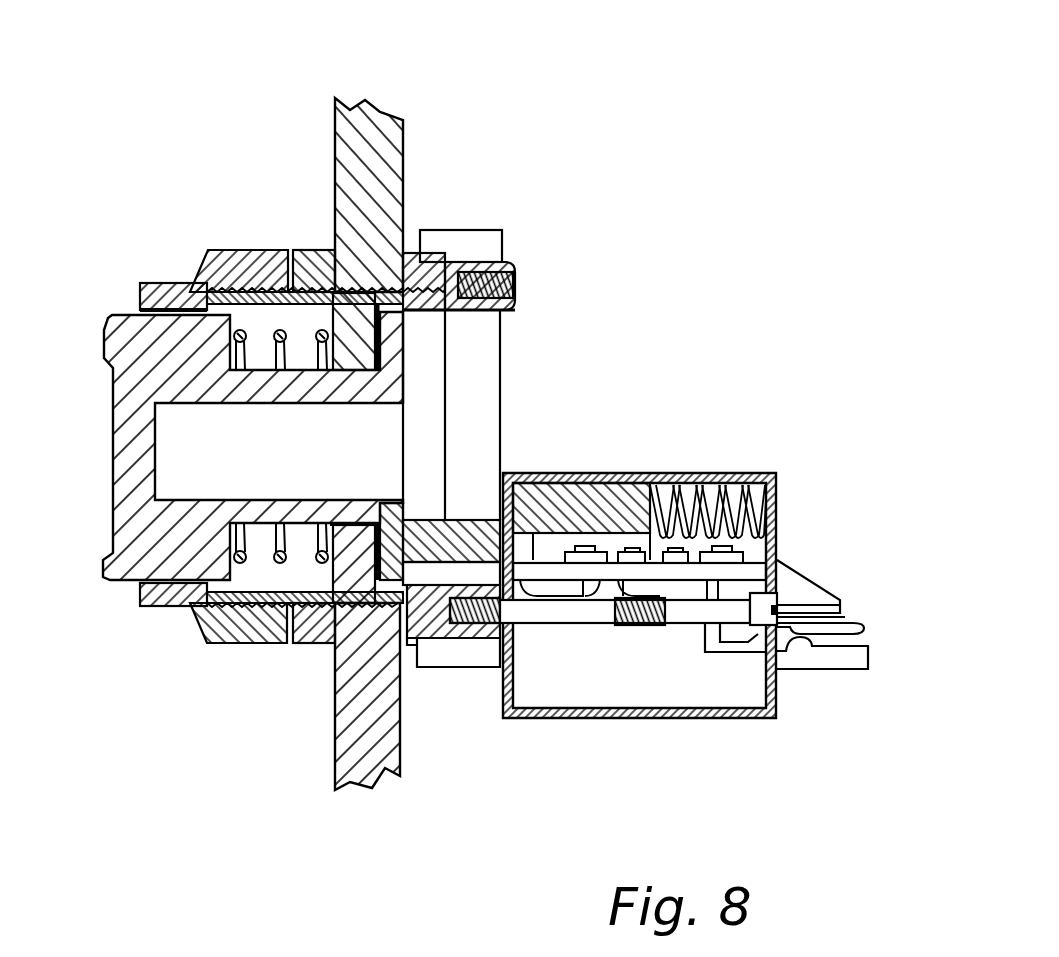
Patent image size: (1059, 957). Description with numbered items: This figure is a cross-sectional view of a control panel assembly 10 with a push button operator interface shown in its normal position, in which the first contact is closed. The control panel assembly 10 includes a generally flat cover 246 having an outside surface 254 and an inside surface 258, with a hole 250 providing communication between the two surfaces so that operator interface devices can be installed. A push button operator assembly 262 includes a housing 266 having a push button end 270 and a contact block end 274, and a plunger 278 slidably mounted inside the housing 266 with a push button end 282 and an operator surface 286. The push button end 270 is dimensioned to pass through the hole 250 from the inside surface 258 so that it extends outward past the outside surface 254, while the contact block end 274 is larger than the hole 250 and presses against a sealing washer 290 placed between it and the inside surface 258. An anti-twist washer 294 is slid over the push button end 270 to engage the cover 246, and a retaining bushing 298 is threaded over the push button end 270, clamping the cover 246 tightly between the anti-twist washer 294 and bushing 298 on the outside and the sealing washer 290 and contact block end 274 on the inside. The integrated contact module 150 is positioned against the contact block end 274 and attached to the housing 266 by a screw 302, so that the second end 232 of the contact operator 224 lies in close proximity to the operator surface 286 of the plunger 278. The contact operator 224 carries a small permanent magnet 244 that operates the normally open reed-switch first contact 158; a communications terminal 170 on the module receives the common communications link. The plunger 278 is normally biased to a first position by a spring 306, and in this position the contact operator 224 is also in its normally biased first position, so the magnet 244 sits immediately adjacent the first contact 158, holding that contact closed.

The control panel assembly 10 is at (583, 122).
The integrated contact module 150 is at (668, 724).
The first contact 158 is at (653, 563).
The communications terminal 170 is at (847, 623).
The contact operator 224 is at (508, 562).
The second end of contact operator 232 is at (447, 498).
The permanent magnet 244 is at (631, 535).
The cover 246 is at (363, 123).
The hole 250 is at (345, 628).
The outside surface 254 is at (335, 167).
The inside surface 258 is at (405, 173).
The push button operator assembly 262 is at (118, 280).
The housing 266 is at (338, 392).
The push button end 270 is at (200, 307).
The contact block end 274 is at (507, 267).
The plunger 278 is at (137, 372).
The push button end of plunger 282 is at (110, 470).
The operator surface 286 is at (405, 505).
The sealing washer 290 is at (407, 247).
The anti-twist washer 294 is at (300, 642).
The retaining bushing 298 is at (165, 607).
The screw 302 is at (578, 612).
The spring 306 is at (287, 523).